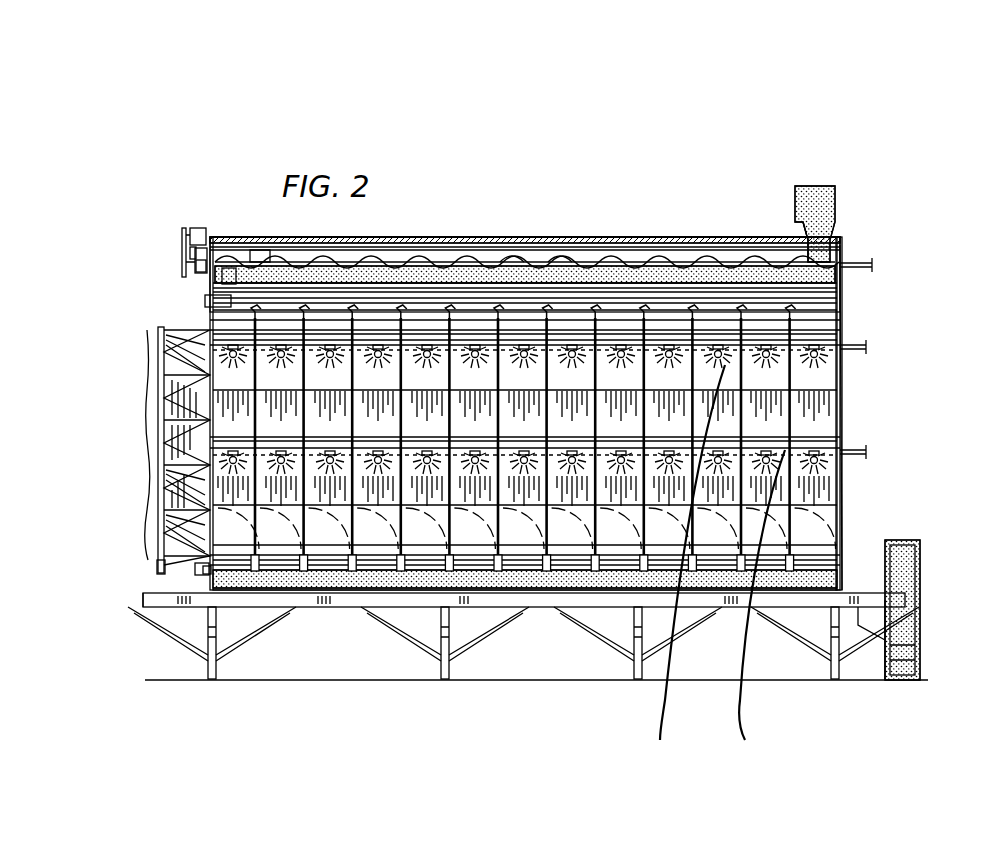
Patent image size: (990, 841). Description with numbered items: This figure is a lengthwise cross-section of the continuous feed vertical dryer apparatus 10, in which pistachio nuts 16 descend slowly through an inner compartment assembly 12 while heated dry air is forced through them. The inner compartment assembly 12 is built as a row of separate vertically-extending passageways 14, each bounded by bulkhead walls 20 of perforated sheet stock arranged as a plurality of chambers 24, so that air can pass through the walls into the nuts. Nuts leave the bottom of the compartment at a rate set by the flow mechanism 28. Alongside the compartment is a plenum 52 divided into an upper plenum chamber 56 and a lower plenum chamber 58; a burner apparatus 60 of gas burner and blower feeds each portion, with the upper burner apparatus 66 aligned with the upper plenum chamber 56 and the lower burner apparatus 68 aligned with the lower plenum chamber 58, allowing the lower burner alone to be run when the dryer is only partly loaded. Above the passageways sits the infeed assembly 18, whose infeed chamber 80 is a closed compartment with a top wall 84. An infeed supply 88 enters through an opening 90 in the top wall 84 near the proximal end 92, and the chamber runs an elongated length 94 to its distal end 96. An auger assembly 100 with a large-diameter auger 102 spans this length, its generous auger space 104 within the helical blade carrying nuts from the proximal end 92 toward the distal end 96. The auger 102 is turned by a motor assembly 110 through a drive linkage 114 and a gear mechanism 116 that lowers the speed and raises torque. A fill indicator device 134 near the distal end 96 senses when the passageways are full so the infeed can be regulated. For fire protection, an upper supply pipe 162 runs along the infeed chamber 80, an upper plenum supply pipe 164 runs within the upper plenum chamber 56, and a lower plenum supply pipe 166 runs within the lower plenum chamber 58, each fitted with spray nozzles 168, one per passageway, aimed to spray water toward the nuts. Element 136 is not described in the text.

The continuous feed vertical dryer apparatus 10 is at (112, 733).
The inner compartment assembly 12 is at (808, 420).
The vertically-extending passageway 14 is at (773, 372).
The pistachio nuts 16 is at (370, 262).
The infeed assembly 18 is at (850, 247).
The bulkhead walls 20 is at (805, 487).
The chambers 24 is at (275, 380).
The flow mechanism 28 is at (848, 562).
The plenum 52 is at (240, 433).
The upper plenum chamber 56 is at (245, 420).
The lower plenum chamber 58 is at (227, 488).
The burner apparatus 60 is at (148, 560).
The upper burner apparatus 66 is at (152, 330).
The lower burner apparatus 68 is at (178, 574).
The infeed chamber 80 is at (660, 226).
The top wall 84 is at (564, 266).
The infeed supply 88 is at (815, 190).
The opening 90 is at (803, 238).
The proximal end 92 is at (848, 236).
The elongated length 94 is at (345, 237).
The distal end 96 is at (210, 236).
The auger assembly 100 is at (262, 262).
The auger 102 is at (597, 272).
The auger space 104 is at (520, 262).
The motor assembly 110 is at (162, 213).
The drive linkage 114 is at (194, 265).
The gear mechanism 116 is at (190, 250).
The fill indicator device 134 is at (212, 302).
The coupling 136 is at (232, 285).
The upper supply pipe 162 is at (858, 268).
The upper plenum supply pipe 164 is at (848, 347).
The lower plenum supply pipe 166 is at (860, 452).
The spray nozzles 168 is at (718, 557).